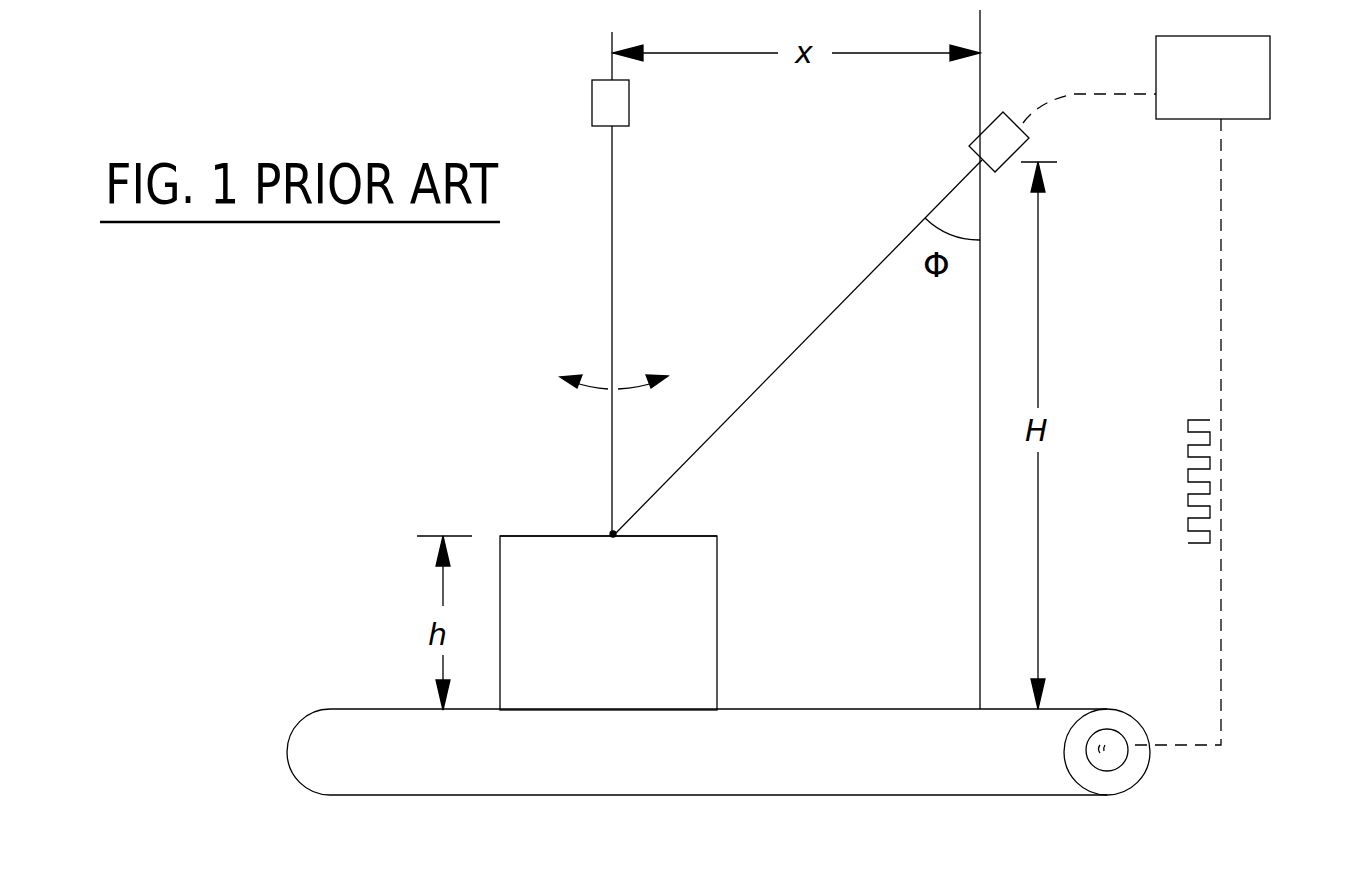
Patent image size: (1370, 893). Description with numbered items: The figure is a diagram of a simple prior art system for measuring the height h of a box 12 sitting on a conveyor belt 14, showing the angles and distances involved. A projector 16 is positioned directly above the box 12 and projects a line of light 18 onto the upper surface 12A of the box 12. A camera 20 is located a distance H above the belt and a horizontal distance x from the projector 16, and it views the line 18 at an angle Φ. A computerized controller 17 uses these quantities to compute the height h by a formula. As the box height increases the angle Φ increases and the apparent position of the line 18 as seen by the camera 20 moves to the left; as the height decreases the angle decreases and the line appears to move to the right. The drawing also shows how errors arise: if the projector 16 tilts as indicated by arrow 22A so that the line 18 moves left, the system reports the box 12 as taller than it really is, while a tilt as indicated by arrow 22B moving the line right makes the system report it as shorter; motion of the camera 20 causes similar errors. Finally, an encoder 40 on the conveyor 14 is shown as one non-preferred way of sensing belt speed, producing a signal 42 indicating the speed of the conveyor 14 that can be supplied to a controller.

The box 12 is at (700, 564).
The upper surface 12A is at (662, 535).
The conveyor belt 14 is at (1080, 707).
The projector 16 is at (622, 104).
The computerized controller 17 is at (1272, 90).
The line of light 18 is at (612, 534).
The camera 20 is at (821, 324).
The arrow 22A is at (587, 372).
The arrow 22B is at (638, 376).
The encoder 40 is at (1115, 755).
The signal 42 is at (1188, 490).